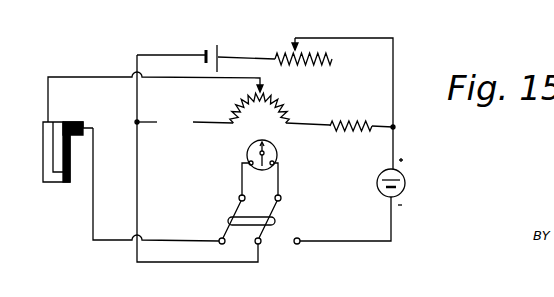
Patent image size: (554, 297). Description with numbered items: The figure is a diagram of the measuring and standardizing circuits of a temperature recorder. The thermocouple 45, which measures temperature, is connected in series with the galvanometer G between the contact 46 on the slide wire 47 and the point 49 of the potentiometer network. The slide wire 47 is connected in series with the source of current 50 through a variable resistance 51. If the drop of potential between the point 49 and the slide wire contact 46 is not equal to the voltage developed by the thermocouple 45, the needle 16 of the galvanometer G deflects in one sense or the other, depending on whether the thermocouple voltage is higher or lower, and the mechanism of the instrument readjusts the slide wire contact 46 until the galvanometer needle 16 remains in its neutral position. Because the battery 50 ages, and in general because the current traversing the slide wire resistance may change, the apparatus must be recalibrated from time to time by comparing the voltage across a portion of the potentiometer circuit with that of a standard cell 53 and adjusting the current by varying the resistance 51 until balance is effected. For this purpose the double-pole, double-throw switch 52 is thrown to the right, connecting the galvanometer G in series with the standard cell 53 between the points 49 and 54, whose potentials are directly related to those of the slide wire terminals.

The thermocouple 45 is at (52, 183).
The point of the potentiometer network 49 is at (135, 122).
The source of current 50 is at (212, 46).
The variable resistance 51 is at (312, 48).
The slide wire contact 46 is at (265, 89).
The slide wire 47 is at (291, 112).
The point 54 is at (395, 128).
The galvanometer needle 16 is at (247, 150).
The galvanometer G is at (277, 157).
The double-pole, double-throw switch 52 is at (280, 208).
The standard cell 53 is at (406, 190).